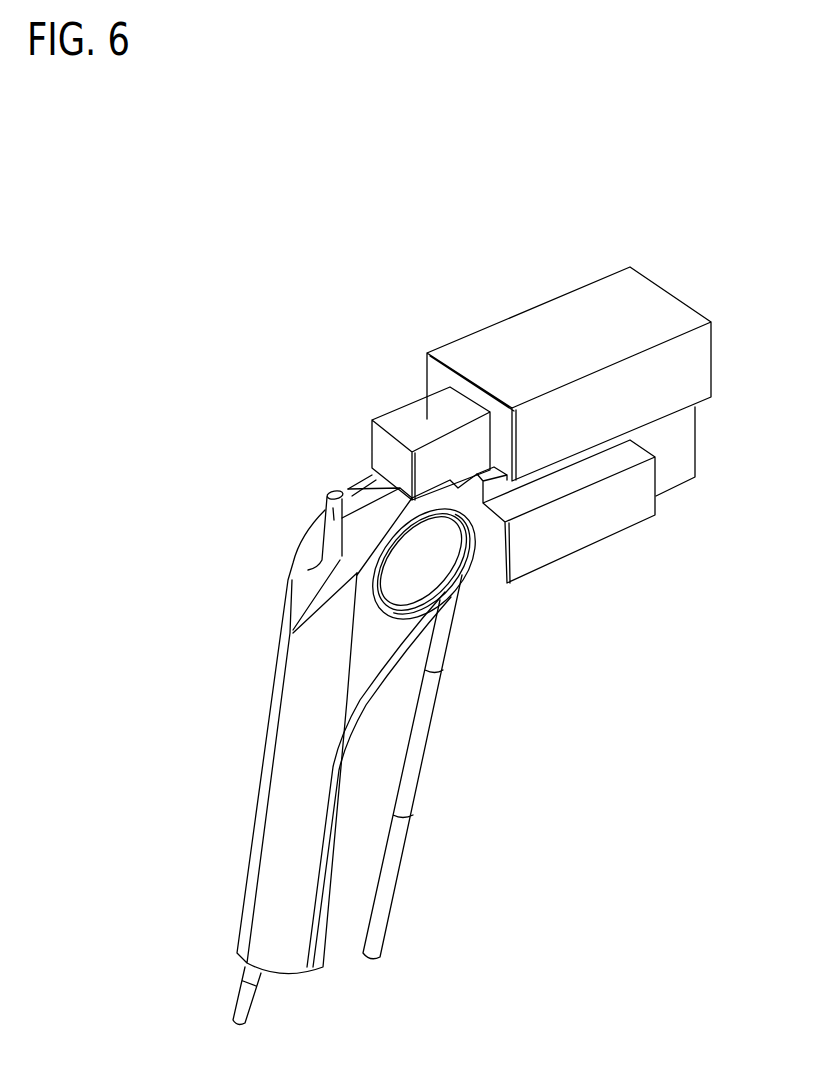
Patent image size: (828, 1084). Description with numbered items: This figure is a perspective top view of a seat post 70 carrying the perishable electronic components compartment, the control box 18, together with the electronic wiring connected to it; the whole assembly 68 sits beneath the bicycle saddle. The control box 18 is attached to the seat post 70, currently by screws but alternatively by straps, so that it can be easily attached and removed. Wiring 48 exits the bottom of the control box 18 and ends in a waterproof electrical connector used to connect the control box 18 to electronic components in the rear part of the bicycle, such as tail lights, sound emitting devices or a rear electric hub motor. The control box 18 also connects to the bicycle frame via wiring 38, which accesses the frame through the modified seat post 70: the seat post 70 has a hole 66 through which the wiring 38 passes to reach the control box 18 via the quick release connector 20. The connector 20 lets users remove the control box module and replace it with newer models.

The sensor assembly 68 is at (521, 365).
The control box 18 is at (600, 330).
The quick release connector 20 is at (350, 500).
The hole 66 is at (355, 572).
The seat post 70 is at (305, 687).
The wiring 38 is at (243, 1005).
The wiring 48 is at (420, 733).